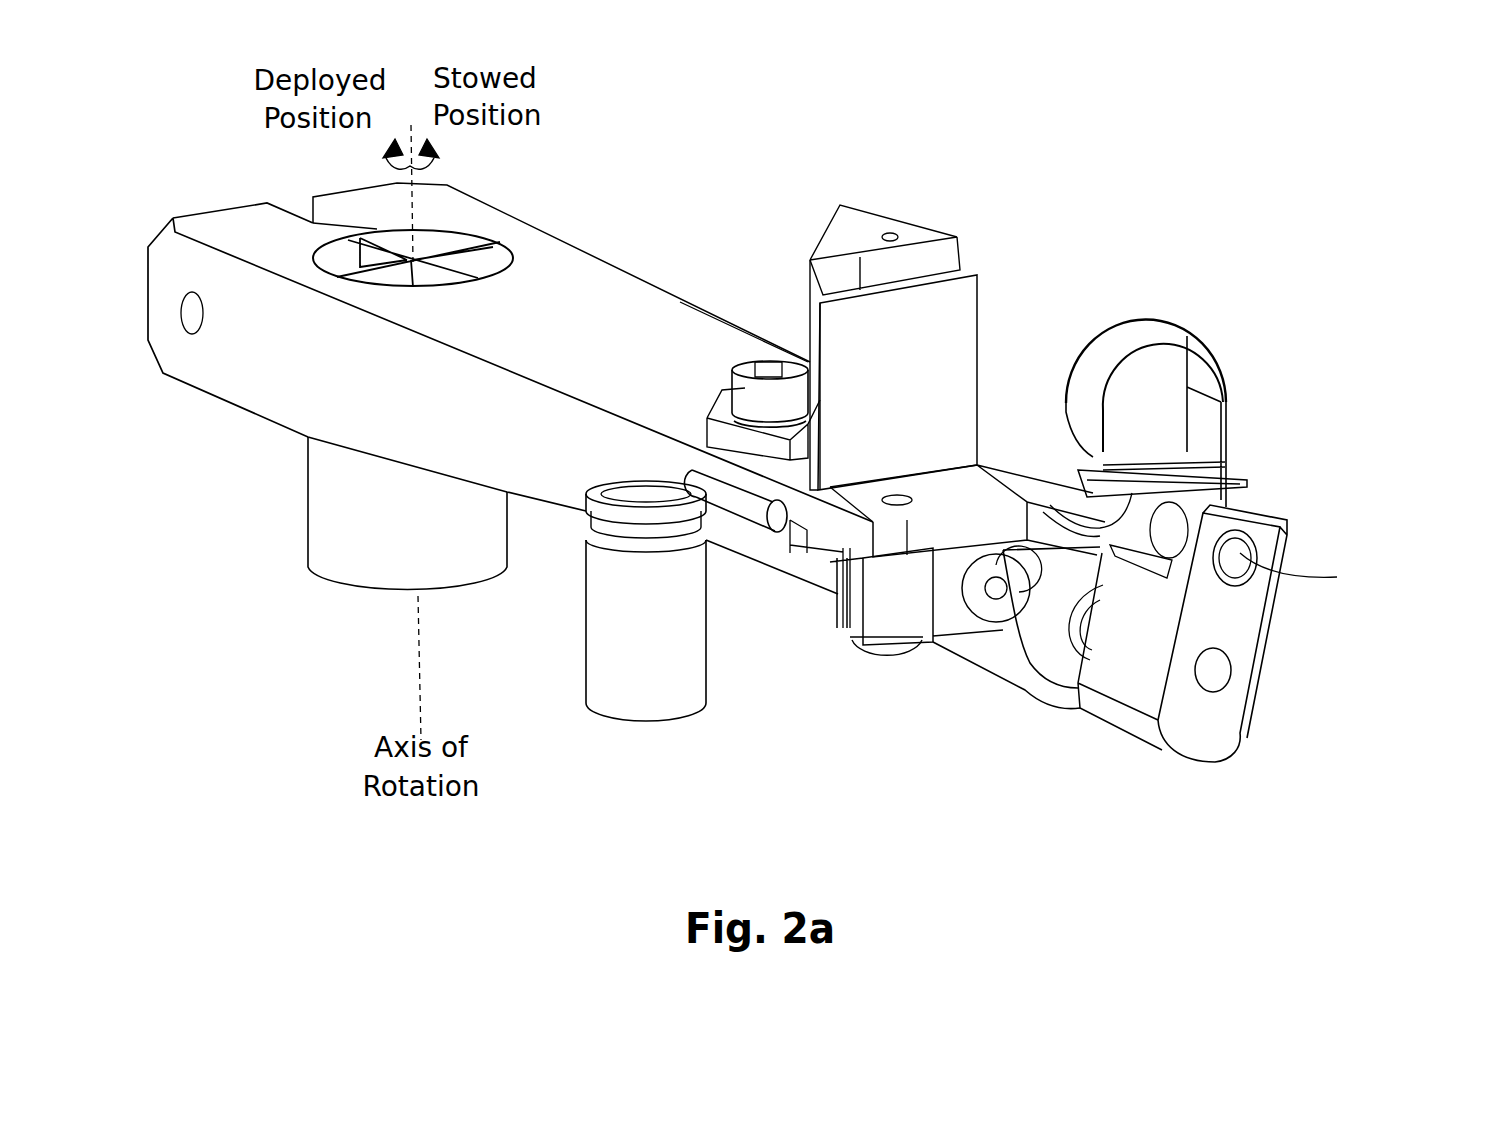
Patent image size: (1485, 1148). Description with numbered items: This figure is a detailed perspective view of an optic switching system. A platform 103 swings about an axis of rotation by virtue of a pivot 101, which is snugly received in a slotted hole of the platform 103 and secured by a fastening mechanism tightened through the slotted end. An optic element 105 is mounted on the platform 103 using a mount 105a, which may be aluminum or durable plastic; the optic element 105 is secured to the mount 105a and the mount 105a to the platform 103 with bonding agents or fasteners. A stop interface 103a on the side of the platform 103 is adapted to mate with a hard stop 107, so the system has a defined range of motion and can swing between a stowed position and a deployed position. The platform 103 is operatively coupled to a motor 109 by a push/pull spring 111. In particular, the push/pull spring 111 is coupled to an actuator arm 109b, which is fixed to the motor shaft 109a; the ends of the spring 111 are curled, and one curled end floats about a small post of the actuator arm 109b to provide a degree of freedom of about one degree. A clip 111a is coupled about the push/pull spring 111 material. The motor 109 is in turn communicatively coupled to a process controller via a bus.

The pivot 101 is at (407, 513).
The platform 103 is at (626, 388).
The stop interface 103a is at (740, 503).
The optic element 105 is at (982, 323).
The mount 105a is at (807, 280).
The hard stop 107 is at (646, 601).
The motor 109 is at (993, 683).
The motor shaft 109a is at (1217, 670).
The actuator arm 109b is at (1240, 630).
The push/pull spring 111 is at (1217, 357).
The clip 111a is at (1247, 483).